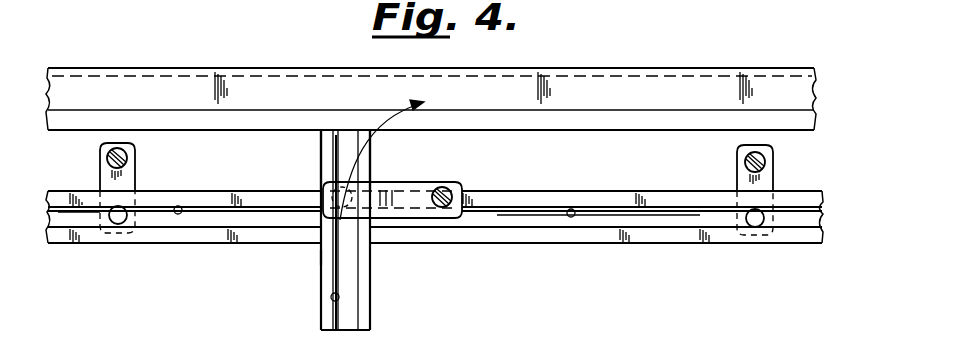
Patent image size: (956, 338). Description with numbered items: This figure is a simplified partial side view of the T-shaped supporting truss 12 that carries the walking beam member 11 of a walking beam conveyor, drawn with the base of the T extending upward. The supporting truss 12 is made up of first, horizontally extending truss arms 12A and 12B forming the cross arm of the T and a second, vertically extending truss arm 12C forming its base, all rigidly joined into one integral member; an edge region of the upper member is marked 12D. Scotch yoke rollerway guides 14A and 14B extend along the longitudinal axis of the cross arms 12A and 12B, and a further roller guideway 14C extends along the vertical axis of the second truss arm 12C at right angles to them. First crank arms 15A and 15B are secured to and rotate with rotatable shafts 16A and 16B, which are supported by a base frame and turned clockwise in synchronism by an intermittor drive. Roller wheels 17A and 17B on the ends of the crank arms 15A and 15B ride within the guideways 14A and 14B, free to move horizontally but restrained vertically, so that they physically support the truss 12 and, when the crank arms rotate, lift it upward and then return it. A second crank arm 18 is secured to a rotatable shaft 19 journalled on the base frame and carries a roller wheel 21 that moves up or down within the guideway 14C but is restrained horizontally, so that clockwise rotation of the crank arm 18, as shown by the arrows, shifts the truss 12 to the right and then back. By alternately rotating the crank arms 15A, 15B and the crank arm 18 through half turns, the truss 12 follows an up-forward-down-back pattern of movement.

The walking beam member 11 is at (571, 70).
The supporting truss 12 is at (319, 171).
The first horizontally extending truss arm 12A is at (181, 243).
The first horizontally extending truss arm 12B is at (532, 244).
The second vertically extending truss arm 12C is at (367, 268).
The upper rail flange 12D is at (503, 122).
The rollerway guide 14A is at (178, 206).
The rollerway guide 14B is at (572, 209).
The roller guideway 14C is at (331, 296).
The crank arm 15A is at (102, 178).
The crank arm 15B is at (768, 178).
The rotatable shaft 16A is at (118, 150).
The rotatable shaft 16B is at (745, 162).
The roller wheel 17A is at (118, 222).
The roller wheel 17B is at (752, 227).
The second crank arm 18 is at (412, 187).
The rotatable shaft 19 is at (446, 190).
The roller wheel 21 is at (319, 258).